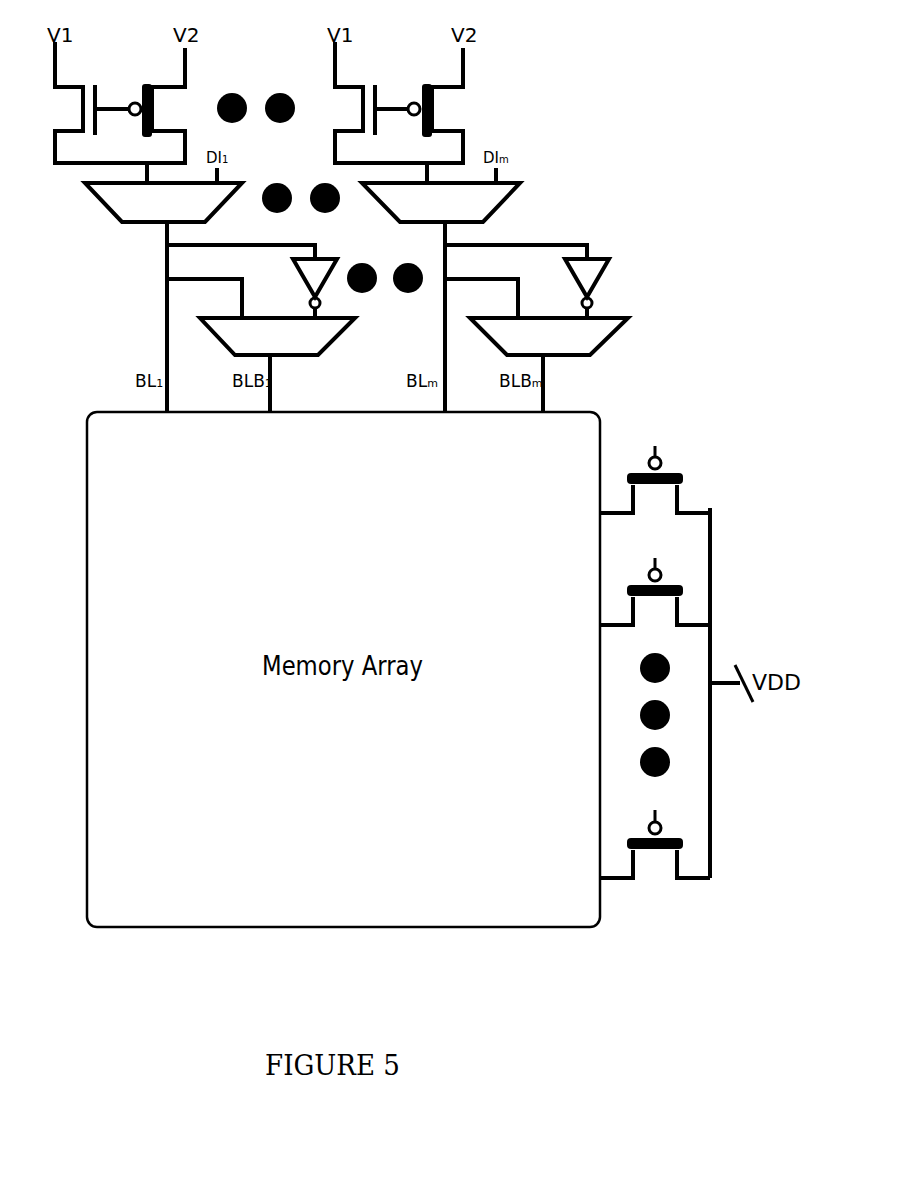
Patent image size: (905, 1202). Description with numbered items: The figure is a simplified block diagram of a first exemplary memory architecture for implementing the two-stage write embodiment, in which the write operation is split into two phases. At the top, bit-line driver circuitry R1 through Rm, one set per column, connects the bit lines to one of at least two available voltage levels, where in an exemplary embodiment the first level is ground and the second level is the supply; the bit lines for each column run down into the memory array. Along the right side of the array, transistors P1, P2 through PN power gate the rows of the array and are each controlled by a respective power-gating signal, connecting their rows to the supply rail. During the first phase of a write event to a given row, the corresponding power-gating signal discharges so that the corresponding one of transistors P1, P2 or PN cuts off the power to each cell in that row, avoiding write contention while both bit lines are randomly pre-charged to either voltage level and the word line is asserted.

The first write driver transistor pair R1 is at (120, 102).
The m-th write driver transistor pair Rm is at (399, 102).
The power gating transistor P1 is at (655, 468).
The power gating transistor P2 is at (655, 580).
The power gating transistor PN is at (655, 833).